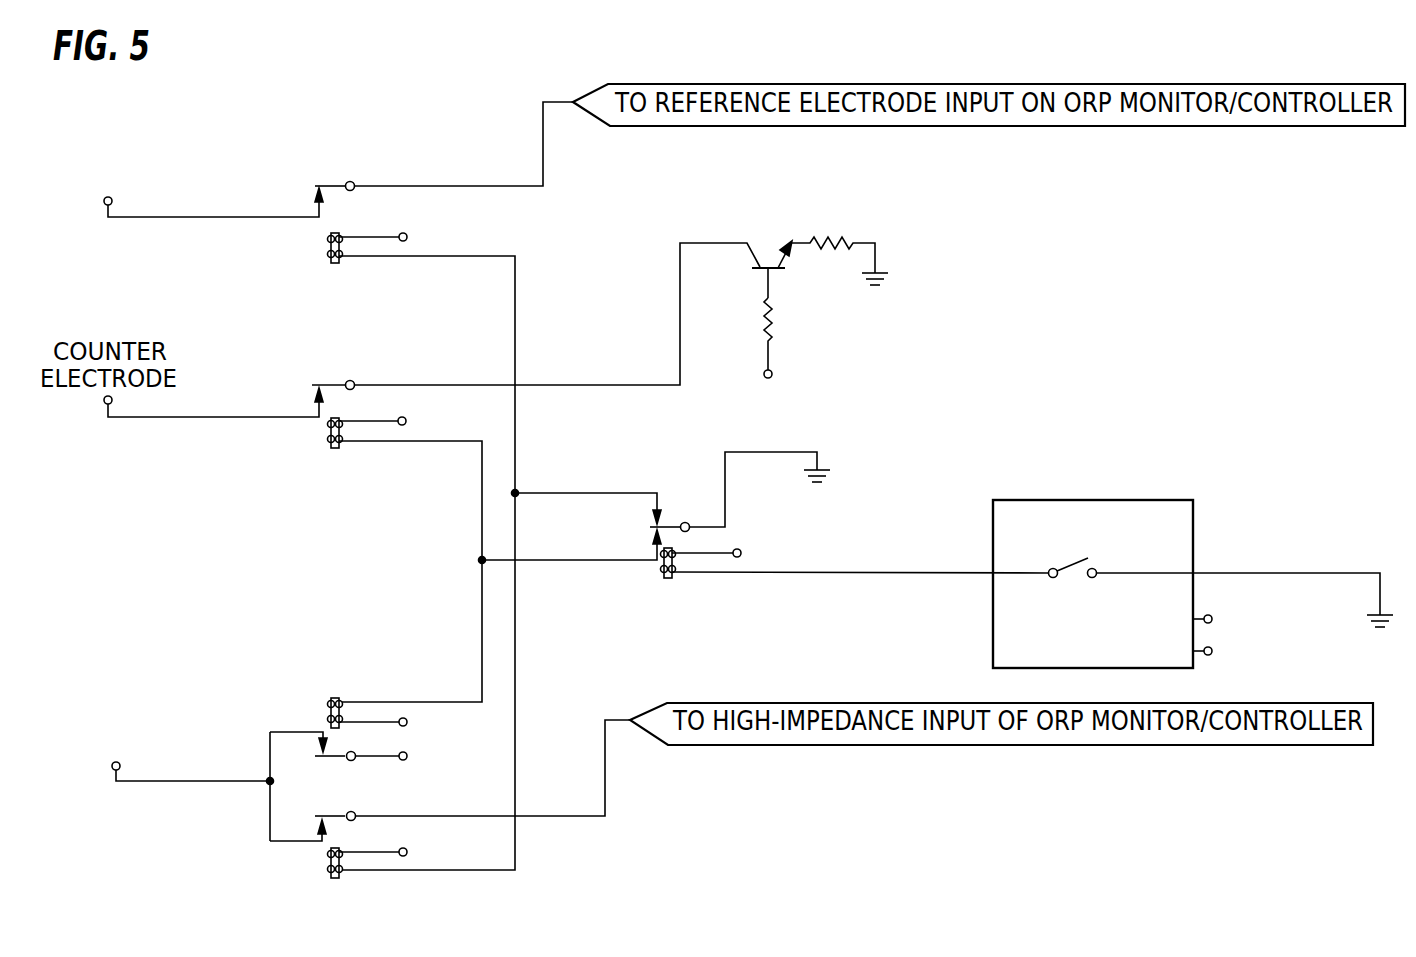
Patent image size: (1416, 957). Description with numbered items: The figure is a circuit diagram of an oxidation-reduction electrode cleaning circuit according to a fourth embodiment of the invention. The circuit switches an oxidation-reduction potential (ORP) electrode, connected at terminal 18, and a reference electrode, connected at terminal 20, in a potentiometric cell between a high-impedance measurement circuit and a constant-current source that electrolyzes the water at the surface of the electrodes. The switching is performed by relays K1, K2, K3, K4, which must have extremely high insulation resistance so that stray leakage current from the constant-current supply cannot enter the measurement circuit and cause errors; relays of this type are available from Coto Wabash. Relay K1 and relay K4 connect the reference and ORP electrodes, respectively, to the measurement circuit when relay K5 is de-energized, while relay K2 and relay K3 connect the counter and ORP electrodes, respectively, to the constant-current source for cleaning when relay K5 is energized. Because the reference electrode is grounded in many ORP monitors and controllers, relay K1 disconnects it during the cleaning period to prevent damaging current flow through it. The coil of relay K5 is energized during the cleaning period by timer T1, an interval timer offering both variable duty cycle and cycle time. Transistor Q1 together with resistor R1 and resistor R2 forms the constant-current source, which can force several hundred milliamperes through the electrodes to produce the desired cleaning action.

The terminal 18 is at (160, 757).
The terminal 20 is at (182, 193).
The relay K1 is at (485, 486).
The relay K2 is at (535, 472).
The relay K3 is at (381, 753).
The relay K4 is at (450, 815).
The relay K5 is at (842, 545).
The transistor Q1 is at (734, 239).
The resistor R1 is at (833, 215).
The resistor R2 is at (780, 354).
The timer T1 is at (1193, 554).